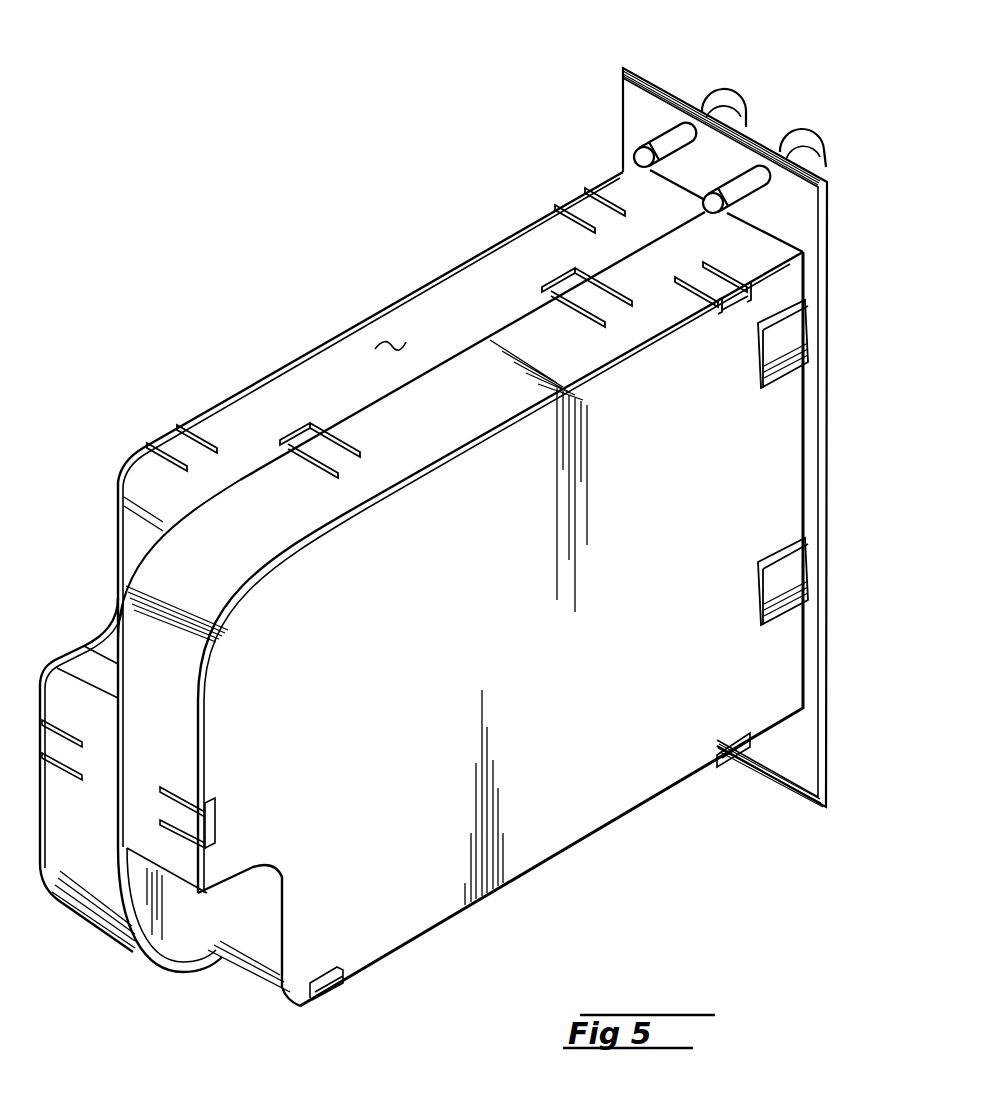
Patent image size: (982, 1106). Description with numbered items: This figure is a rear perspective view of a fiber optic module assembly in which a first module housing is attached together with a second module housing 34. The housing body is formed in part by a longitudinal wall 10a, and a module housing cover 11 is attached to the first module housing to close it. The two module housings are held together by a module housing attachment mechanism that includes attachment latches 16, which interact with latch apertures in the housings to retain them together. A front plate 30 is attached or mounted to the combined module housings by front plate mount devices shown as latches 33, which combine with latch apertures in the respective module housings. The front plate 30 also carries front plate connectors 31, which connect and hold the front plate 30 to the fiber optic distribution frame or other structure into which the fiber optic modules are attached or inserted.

The longitudinal wall 10a is at (472, 588).
The module housing cover 11 is at (220, 400).
The attachment latch 16 is at (320, 440).
The front plate 30 is at (769, 409).
The front plate connector 31 is at (750, 107).
The latch 33 is at (790, 330).
The second module housing 34 is at (393, 350).